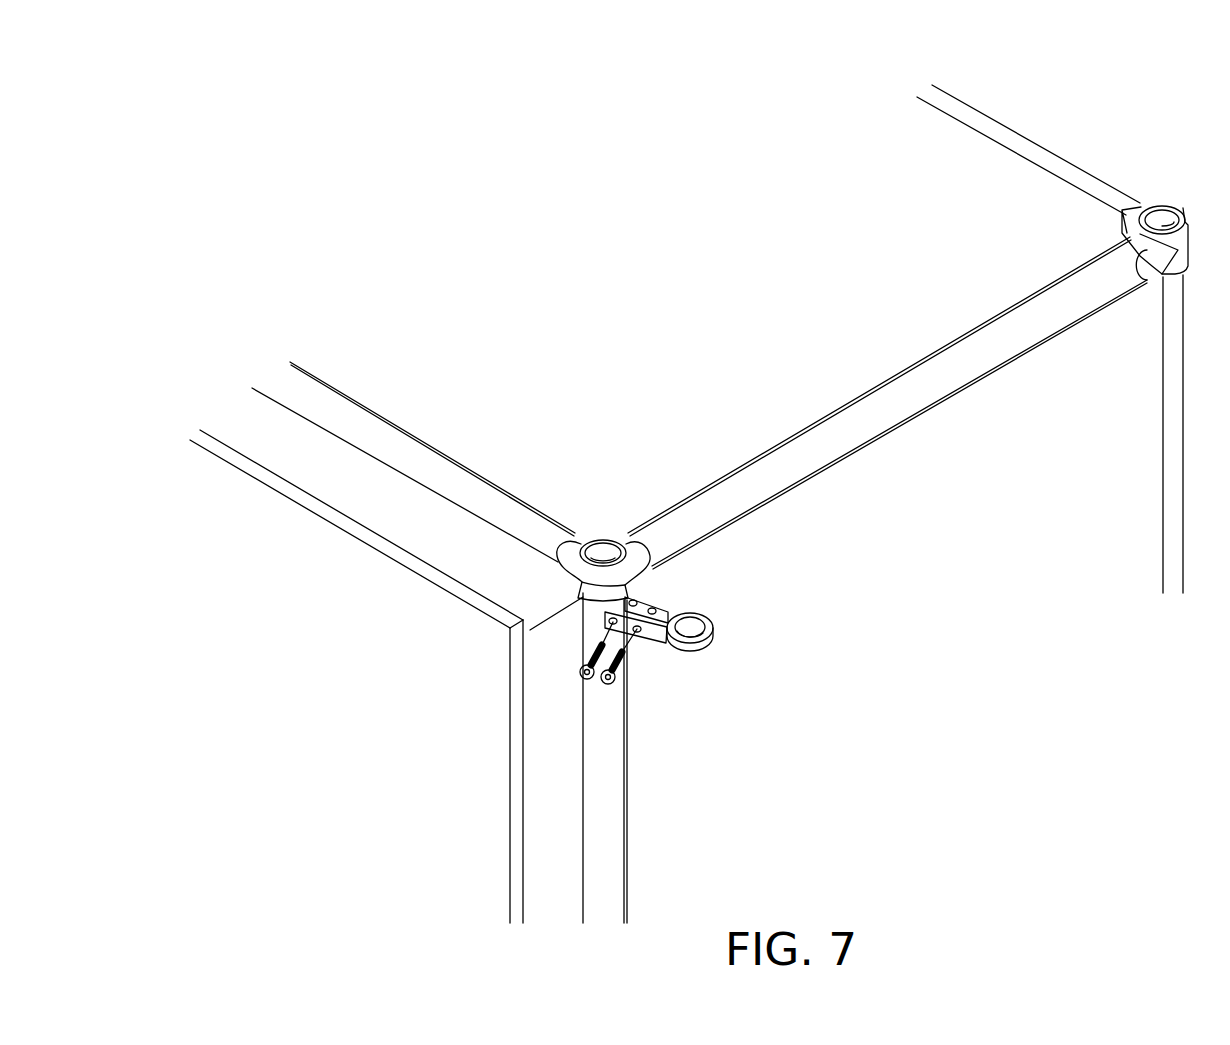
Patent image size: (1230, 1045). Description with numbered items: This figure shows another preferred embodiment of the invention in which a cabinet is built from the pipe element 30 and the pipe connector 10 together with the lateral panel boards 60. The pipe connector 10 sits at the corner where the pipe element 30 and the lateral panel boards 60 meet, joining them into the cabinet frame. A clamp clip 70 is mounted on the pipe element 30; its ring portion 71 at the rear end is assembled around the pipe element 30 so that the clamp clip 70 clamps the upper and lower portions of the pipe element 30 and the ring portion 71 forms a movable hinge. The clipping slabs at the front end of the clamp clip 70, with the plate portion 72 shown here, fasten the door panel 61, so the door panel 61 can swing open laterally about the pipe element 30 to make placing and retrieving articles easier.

The pipe connector 10 is at (614, 540).
The pipe element 30 is at (607, 810).
The lateral panel board 60 is at (820, 507).
The door panel 61 is at (248, 503).
The clamp clip 70 is at (699, 651).
The ring portion 71 is at (685, 650).
The mounting plate of bracket 72 is at (645, 602).